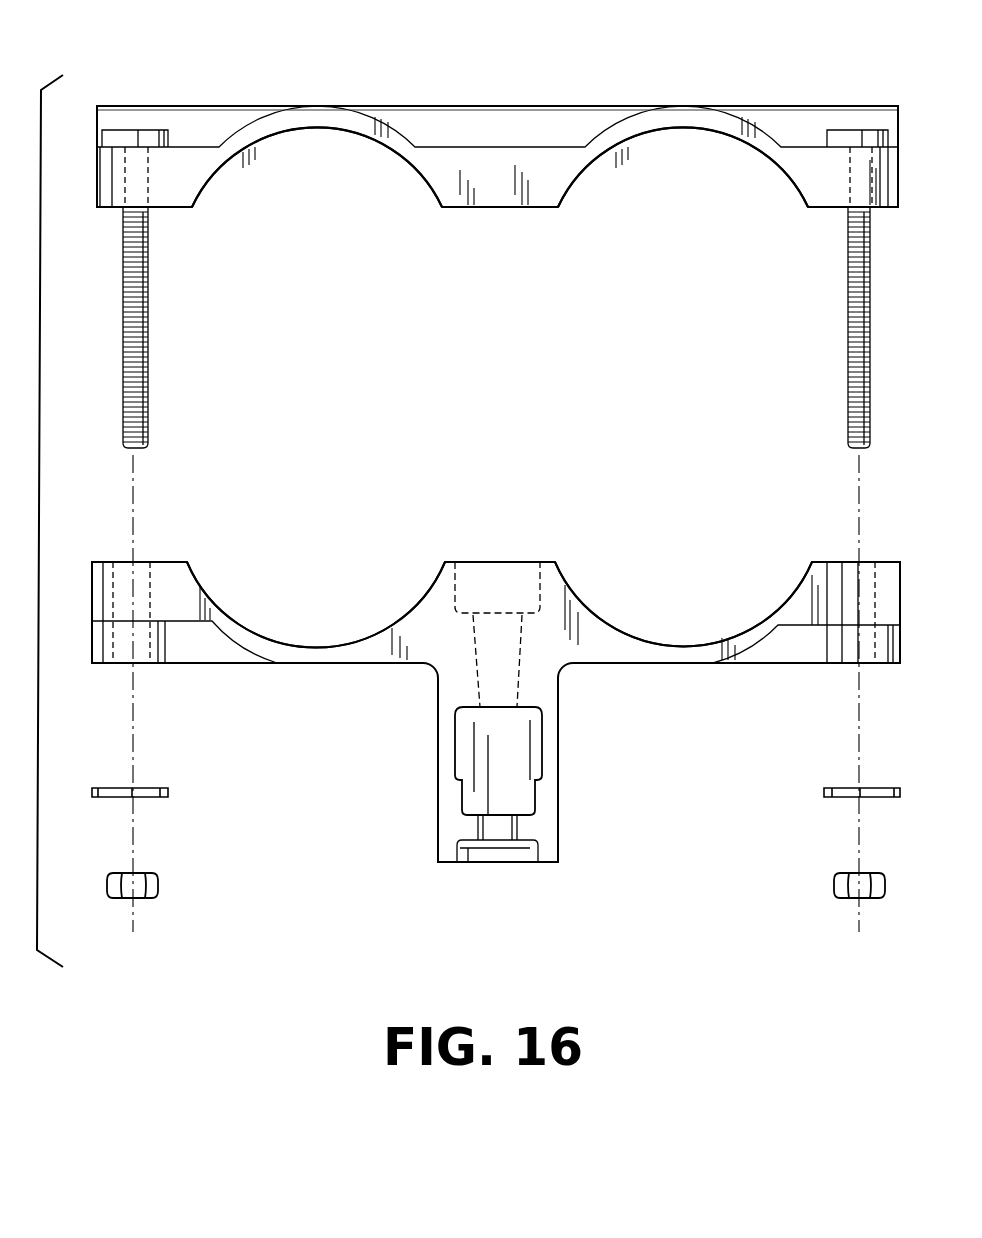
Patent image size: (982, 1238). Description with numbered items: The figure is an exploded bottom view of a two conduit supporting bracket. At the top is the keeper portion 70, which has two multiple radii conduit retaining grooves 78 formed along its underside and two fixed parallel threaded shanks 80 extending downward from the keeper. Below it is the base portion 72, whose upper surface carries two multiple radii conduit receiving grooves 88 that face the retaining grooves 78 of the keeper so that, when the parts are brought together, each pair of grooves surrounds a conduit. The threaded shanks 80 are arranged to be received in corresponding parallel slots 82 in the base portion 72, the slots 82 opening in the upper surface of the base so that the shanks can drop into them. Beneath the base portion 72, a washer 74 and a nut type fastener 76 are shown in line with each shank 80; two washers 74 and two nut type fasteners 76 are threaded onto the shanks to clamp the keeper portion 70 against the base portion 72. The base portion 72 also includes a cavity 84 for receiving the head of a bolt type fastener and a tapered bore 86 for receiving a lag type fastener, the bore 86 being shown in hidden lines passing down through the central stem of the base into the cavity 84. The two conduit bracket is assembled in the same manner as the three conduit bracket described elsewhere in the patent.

The keeper portion 70 is at (497, 132).
The base portion 72 is at (496, 658).
The washer 74 is at (152, 787).
The nut type fastener 76 is at (155, 872).
The multiple radii conduit retaining groove 78 is at (303, 142).
The threaded shank 80 is at (148, 386).
The slot 82 is at (150, 582).
The cavity 84 is at (518, 770).
The tapered bore 86 is at (480, 622).
The multiple radii conduit receiving groove 88 is at (309, 630).